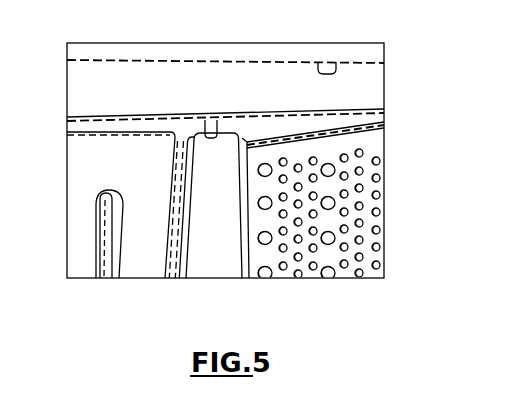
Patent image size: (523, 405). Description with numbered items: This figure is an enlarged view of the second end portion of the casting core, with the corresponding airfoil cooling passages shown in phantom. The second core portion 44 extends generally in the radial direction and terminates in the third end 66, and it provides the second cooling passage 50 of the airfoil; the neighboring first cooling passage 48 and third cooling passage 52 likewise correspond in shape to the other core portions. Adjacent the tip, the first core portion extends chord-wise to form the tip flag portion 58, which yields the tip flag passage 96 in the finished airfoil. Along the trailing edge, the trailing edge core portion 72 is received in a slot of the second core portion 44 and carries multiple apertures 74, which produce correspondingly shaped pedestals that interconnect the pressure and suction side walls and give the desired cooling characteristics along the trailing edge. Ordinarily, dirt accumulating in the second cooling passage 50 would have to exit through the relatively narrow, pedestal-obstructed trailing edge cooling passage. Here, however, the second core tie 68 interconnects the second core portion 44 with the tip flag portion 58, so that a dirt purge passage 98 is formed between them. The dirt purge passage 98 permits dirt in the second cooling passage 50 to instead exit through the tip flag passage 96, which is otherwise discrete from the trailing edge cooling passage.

The second core portion 44 is at (206, 283).
The first cooling passage 48 is at (94, 92).
The second cooling passage 50 is at (178, 230).
The third cooling passage 52 is at (110, 258).
The tip flag portion 58 is at (280, 82).
The third end 66 is at (216, 245).
The second core tie 68 is at (202, 146).
The trailing edge core portion 72 is at (384, 141).
The apertures 74 is at (301, 206).
The tip flag passage 96 is at (336, 58).
The dirt purge passage 98 is at (210, 120).